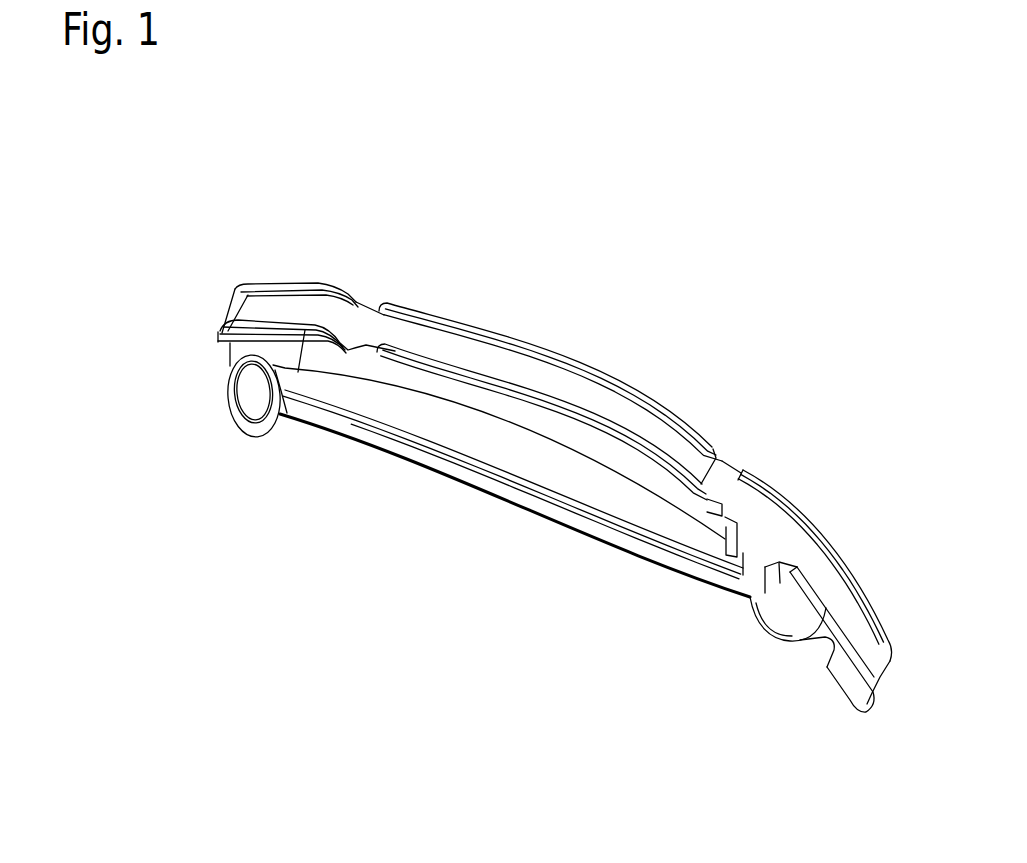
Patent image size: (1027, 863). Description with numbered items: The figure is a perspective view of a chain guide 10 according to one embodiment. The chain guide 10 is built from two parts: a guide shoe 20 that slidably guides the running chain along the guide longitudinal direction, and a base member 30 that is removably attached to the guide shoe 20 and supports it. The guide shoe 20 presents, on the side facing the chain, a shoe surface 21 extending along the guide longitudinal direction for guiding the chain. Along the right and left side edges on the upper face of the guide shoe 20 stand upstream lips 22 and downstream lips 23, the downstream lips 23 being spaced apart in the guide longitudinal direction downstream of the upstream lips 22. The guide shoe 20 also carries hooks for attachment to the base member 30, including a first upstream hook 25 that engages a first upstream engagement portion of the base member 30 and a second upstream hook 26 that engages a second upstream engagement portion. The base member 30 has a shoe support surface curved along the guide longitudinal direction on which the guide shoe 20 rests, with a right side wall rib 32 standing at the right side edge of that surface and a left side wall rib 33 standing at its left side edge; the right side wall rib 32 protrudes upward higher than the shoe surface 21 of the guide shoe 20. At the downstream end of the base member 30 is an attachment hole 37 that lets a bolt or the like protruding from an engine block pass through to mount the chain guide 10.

The chain guide 10 is at (219, 196).
The guide shoe 20 is at (432, 342).
The shoe surface 21 is at (615, 410).
The upstream lips 22 is at (823, 540).
The downstream lips 23 is at (304, 285).
The first upstream hook 25 is at (852, 677).
The second upstream hook 26 is at (750, 562).
The base member 30 is at (399, 400).
The right side wall rib 32 is at (545, 352).
The left side wall rib 33 is at (526, 408).
The attachment hole 37 is at (249, 393).